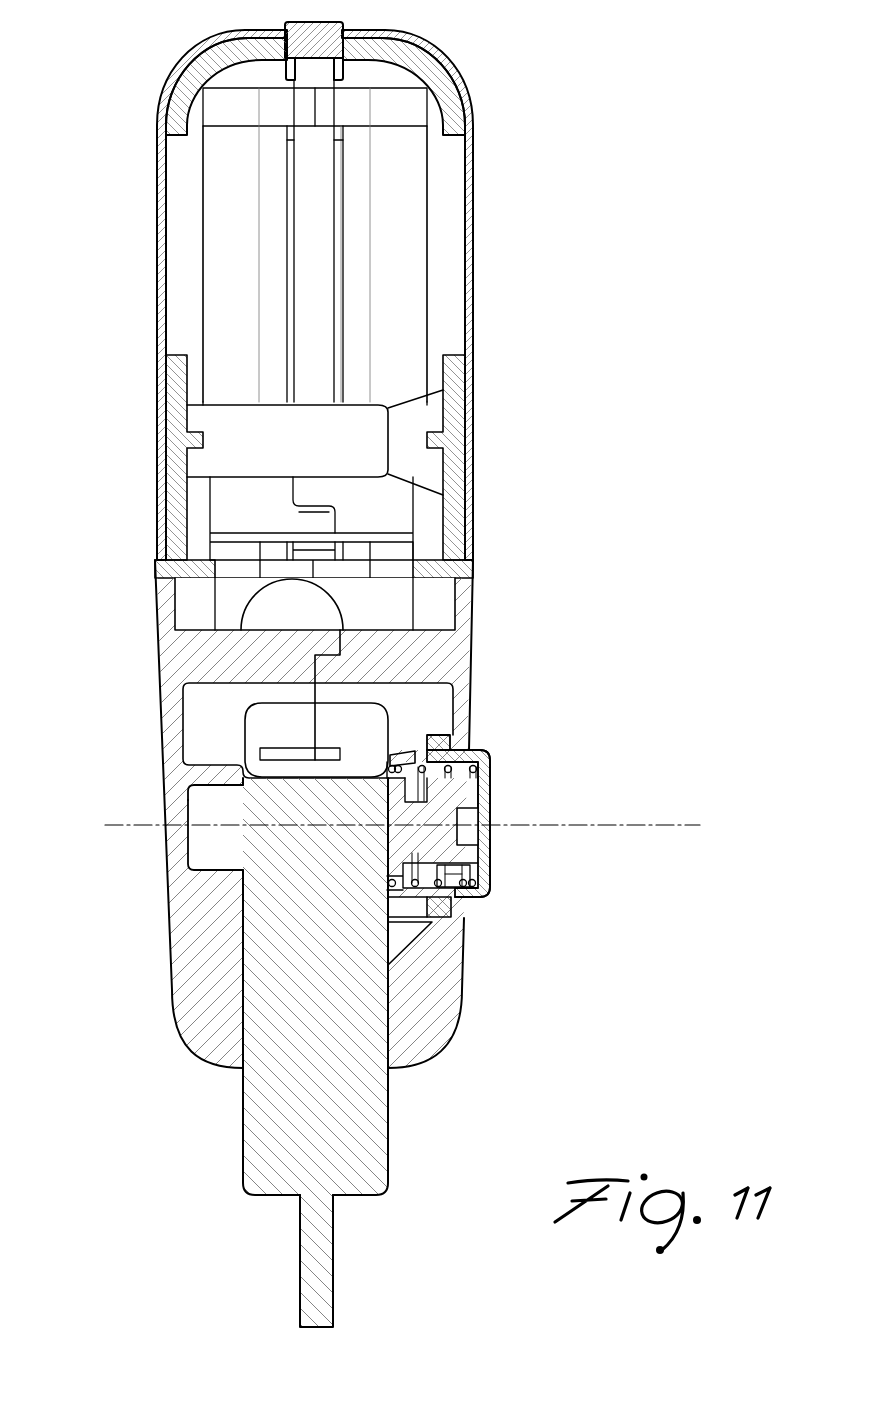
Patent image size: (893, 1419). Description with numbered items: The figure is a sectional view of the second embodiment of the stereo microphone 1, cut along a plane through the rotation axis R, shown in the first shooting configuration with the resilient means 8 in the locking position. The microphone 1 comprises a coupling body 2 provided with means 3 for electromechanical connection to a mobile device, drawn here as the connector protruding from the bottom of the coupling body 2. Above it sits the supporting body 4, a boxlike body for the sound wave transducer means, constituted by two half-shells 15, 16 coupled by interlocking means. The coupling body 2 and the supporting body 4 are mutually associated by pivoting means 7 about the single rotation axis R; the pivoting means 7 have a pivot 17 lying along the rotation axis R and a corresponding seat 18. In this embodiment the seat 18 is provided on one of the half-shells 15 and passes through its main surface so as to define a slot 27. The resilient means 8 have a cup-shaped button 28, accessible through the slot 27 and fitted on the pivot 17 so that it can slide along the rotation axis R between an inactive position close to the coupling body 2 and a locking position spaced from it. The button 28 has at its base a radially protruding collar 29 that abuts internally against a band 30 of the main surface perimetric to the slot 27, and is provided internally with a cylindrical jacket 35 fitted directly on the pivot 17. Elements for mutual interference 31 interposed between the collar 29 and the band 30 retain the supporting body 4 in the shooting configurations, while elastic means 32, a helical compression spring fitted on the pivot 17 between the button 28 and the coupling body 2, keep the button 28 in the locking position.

The stereo microphone 1 is at (655, 630).
The coupling body 2 is at (238, 1160).
The means for electromechanical connection 3 is at (315, 1268).
The supporting body 4 is at (484, 427).
The pivoting means 7 is at (202, 876).
The resilient means 8 is at (502, 836).
The half-shell 15 is at (483, 567).
The half-shell 16 is at (150, 567).
The pivot 17 is at (215, 845).
The seat 18 is at (200, 790).
The slot 27 is at (478, 910).
The button 28 is at (492, 792).
The collar 29 is at (442, 741).
The band 30 is at (418, 757).
The elements for mutual interference 31 is at (460, 922).
The elastic means 32 is at (492, 890).
The cylindrical jacket 35 is at (487, 825).
The rotation axis R is at (678, 825).